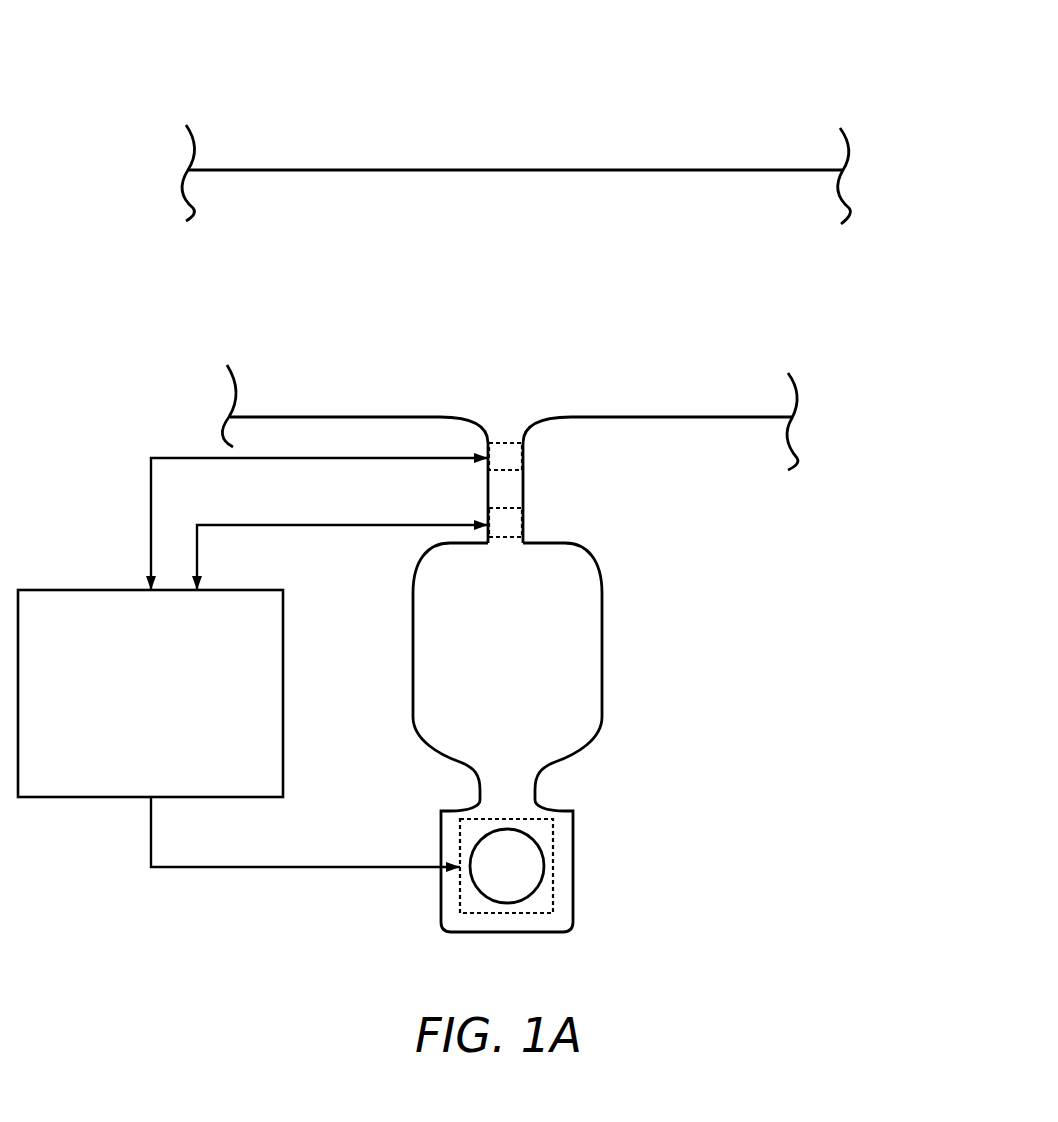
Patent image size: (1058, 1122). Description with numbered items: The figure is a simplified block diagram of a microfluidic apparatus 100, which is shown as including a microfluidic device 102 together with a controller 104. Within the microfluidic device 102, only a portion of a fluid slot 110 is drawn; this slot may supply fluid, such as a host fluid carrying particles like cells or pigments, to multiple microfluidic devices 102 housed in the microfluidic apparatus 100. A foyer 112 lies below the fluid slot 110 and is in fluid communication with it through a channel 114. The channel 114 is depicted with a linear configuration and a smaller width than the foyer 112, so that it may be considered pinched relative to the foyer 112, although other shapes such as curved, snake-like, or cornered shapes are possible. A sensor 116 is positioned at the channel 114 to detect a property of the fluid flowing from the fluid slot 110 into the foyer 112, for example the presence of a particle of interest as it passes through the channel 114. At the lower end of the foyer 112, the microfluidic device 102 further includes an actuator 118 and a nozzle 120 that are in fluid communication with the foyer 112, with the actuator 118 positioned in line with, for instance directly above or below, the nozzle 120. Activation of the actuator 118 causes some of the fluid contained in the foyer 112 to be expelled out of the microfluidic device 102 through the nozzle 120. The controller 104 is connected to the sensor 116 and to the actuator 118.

The microfluidic apparatus 100 is at (300, 90).
The microfluidic device 102 is at (733, 570).
The controller 104 is at (171, 719).
The fluid slot 110 is at (527, 264).
The foyer 112 is at (527, 681).
The channel 114 is at (523, 496).
The sensor 116 is at (493, 413).
The actuator 118 is at (553, 848).
The nozzle 120 is at (533, 893).